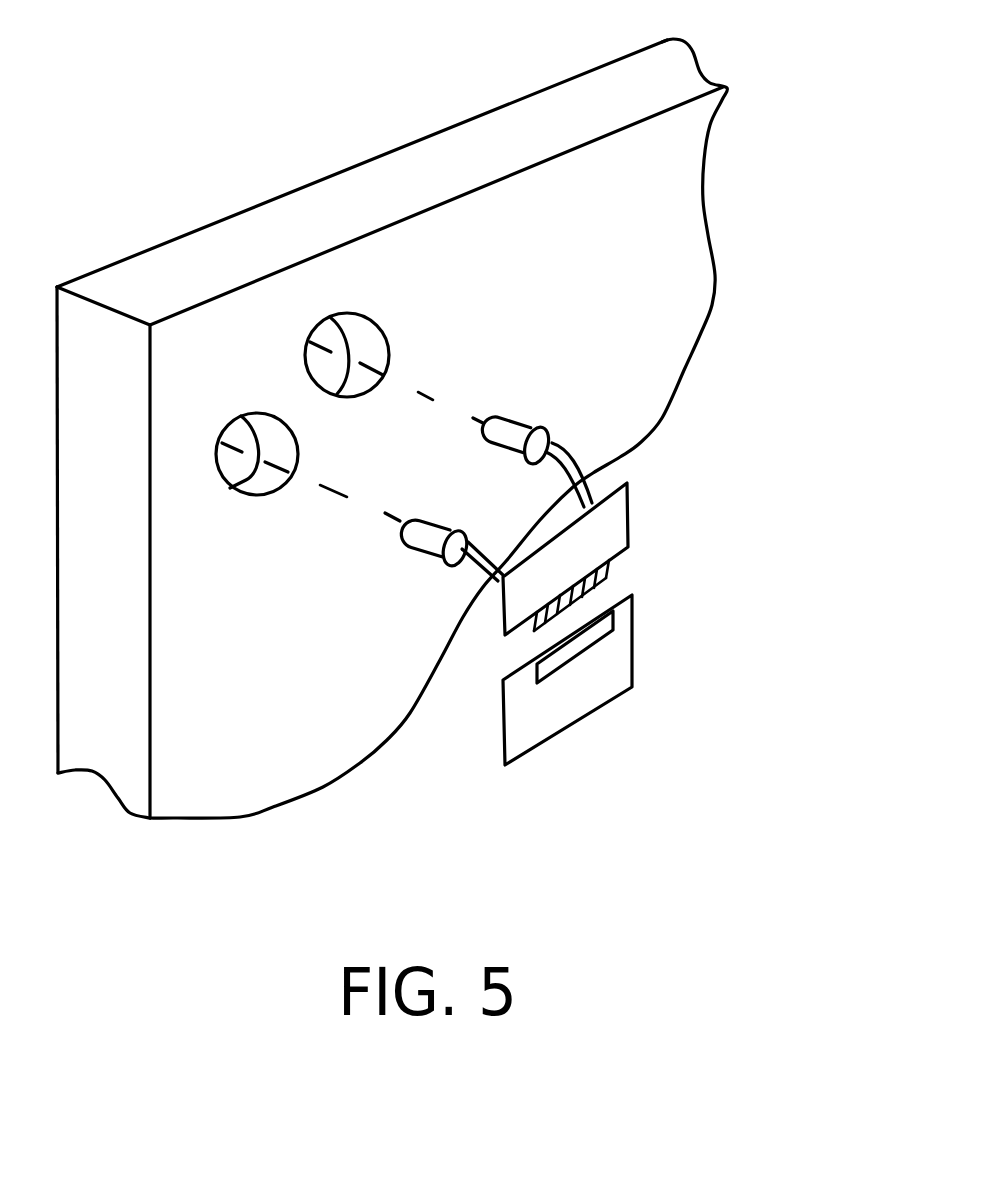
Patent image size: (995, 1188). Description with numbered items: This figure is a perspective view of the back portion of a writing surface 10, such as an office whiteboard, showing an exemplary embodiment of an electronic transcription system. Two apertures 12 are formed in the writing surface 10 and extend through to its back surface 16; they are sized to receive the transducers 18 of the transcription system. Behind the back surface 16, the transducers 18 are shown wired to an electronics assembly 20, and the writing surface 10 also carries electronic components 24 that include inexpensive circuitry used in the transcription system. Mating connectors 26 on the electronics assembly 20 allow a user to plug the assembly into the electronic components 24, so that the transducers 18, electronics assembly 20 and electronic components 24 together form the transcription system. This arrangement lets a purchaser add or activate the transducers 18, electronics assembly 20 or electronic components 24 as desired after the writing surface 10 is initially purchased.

The writing surface 10 is at (540, 137).
The apertures 12 is at (380, 325).
The back surface 16 is at (663, 263).
The transducers 18 is at (523, 412).
The electronics assembly 20 is at (633, 510).
The electronic components 24 is at (550, 715).
The mating connectors 26 is at (603, 623).